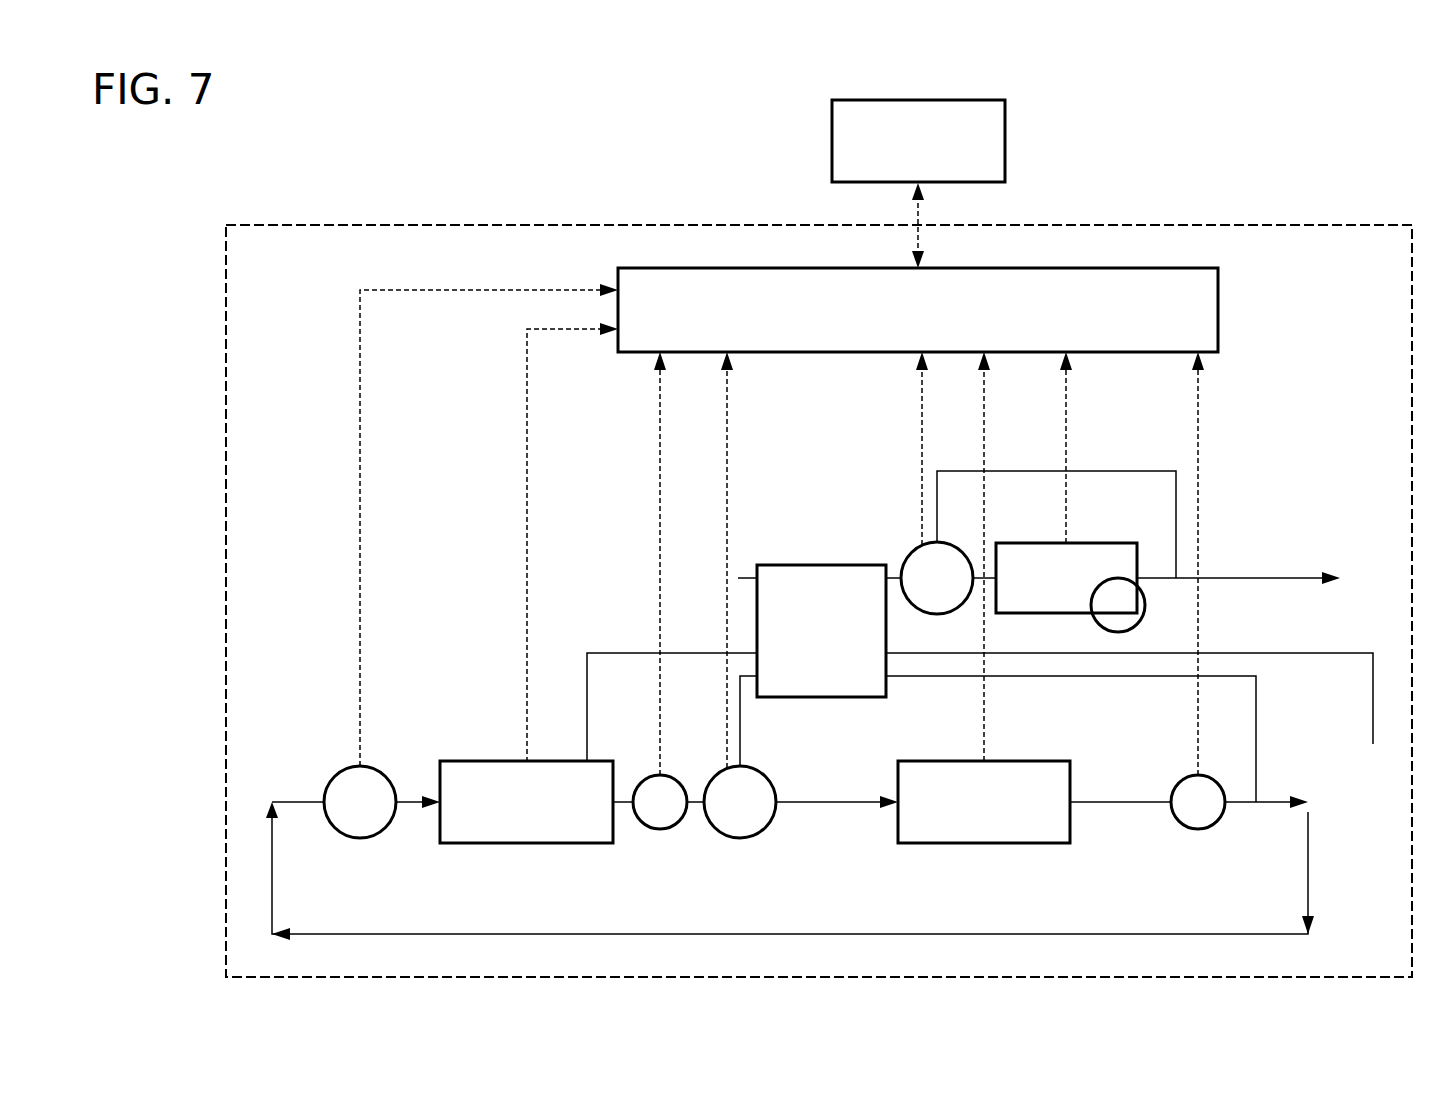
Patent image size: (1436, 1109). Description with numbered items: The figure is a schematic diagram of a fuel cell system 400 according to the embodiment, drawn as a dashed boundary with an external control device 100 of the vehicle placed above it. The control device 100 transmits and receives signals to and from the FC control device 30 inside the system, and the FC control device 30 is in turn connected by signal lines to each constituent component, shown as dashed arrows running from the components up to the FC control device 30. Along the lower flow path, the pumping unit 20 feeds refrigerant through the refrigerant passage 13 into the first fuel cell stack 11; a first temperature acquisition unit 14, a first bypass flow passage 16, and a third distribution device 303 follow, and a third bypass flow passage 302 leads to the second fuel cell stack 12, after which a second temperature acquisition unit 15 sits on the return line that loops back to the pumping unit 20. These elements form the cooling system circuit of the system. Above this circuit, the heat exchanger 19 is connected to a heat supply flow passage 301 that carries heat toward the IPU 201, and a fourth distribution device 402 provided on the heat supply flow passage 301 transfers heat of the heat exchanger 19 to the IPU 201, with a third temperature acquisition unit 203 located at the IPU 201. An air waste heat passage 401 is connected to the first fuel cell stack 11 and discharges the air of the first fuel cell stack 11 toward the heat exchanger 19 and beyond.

The fuel cell system 400 is at (348, 182).
The control device 100 is at (832, 140).
The FC control device 30 is at (1185, 268).
The pumping unit 20 is at (383, 766).
The refrigerant passage 13 is at (414, 798).
The first fuel cell stack 11 is at (525, 843).
The first temperature acquisition unit 14 is at (676, 778).
The first bypass flow passage 16 is at (697, 805).
The third distribution device 303 is at (740, 838).
The third bypass flow passage 302 is at (818, 806).
The second fuel cell stack 12 is at (984, 843).
The second temperature acquisition unit 15 is at (1198, 829).
The heat exchanger 19 is at (821, 565).
The heat supply flow passage 301 is at (893, 578).
The fourth distribution device 402 is at (910, 556).
The IPU 201 is at (1097, 543).
The third temperature acquisition unit 203 is at (1104, 628).
The air waste heat passage 401 is at (614, 652).